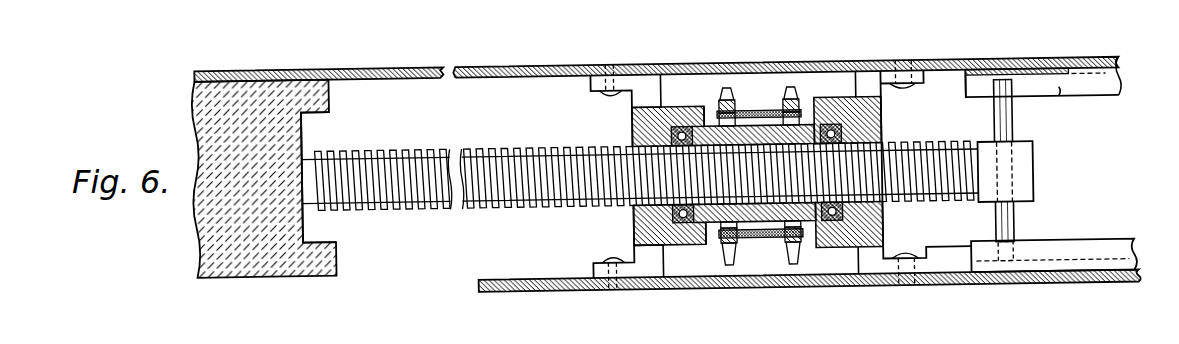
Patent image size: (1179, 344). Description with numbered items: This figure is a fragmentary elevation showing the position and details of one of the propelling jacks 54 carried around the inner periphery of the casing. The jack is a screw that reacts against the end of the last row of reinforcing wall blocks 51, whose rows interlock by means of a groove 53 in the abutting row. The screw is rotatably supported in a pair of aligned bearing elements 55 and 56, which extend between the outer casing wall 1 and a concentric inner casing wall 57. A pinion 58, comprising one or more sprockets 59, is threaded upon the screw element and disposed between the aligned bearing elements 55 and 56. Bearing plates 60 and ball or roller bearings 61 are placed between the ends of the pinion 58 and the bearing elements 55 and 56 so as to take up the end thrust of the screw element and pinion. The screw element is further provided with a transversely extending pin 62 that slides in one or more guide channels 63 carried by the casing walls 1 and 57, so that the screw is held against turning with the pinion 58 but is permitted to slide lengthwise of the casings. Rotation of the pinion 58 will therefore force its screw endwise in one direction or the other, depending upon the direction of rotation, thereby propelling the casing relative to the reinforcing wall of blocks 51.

The outer casing wall 1 is at (547, 76).
The reinforcing wall blocks 51 is at (278, 257).
The groove 53 is at (303, 125).
The jack 54 is at (380, 146).
The bearing element 55 is at (883, 104).
The bearing element 56 is at (633, 91).
The inner casing wall 57 is at (777, 289).
The pinion 58 is at (786, 101).
The sprocket 59 is at (722, 95).
The bearing plate 60 is at (688, 245).
The ball or roller bearing 61 is at (680, 221).
The pin 62 is at (1013, 129).
The guide channel 63 is at (1092, 101).